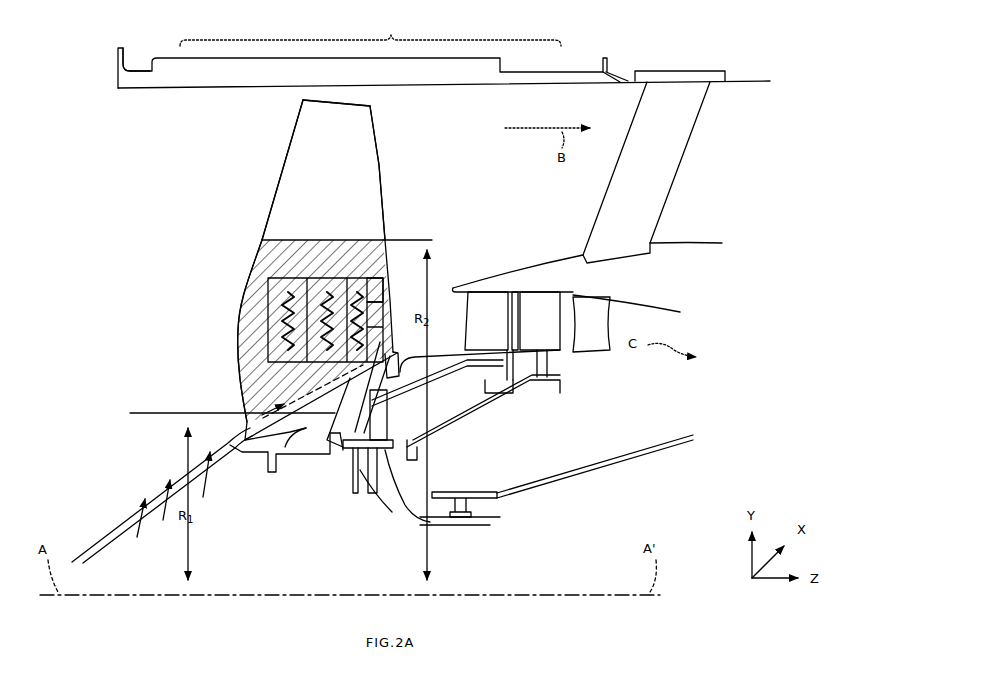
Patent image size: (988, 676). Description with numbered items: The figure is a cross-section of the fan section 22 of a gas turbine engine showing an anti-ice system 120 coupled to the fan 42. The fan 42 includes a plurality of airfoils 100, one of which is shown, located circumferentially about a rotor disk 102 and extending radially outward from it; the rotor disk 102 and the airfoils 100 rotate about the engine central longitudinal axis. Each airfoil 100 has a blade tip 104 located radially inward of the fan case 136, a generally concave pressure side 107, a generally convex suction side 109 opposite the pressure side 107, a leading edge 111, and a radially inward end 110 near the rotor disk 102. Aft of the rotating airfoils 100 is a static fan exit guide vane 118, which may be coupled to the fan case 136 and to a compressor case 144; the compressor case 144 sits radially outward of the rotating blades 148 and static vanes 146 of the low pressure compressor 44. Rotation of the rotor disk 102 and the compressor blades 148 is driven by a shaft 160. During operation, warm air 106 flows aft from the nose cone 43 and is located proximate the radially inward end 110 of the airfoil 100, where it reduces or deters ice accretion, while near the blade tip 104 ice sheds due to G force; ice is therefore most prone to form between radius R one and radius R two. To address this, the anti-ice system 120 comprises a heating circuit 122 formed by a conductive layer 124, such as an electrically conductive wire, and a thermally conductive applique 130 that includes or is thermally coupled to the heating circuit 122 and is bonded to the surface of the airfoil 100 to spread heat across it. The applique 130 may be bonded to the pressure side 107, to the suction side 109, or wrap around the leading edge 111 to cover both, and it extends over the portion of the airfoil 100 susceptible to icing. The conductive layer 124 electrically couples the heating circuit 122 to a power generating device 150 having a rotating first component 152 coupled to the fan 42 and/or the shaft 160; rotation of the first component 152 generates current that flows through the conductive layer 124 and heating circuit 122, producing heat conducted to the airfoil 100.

The fan section 22 is at (444, 50).
The fan case 136 is at (155, 66).
The fan exit guide vane 118 is at (670, 94).
The airfoil 100 is at (315, 270).
The pressure side 107 is at (307, 177).
The blade tip 104 is at (348, 99).
The suction side 109 is at (386, 164).
The fan 42 is at (263, 189).
The anti-ice system 120 is at (156, 245).
The thermally conductive applique 130 is at (268, 257).
The heating circuit 122 is at (250, 294).
The conductive layer 124 is at (378, 290).
The leading edge 111 is at (238, 352).
The radially inward end 110 is at (247, 416).
The warm air 106 is at (238, 430).
The nose cone 43 is at (118, 525).
The rotor disk 102 is at (272, 466).
The power generating device 150 is at (338, 453).
The first component 152 is at (358, 498).
The shaft 160 is at (397, 508).
The low pressure compressor 44 is at (487, 270).
The compressor case 144 is at (531, 277).
The static vanes 146 is at (537, 334).
The rotating blades 148 is at (533, 336).